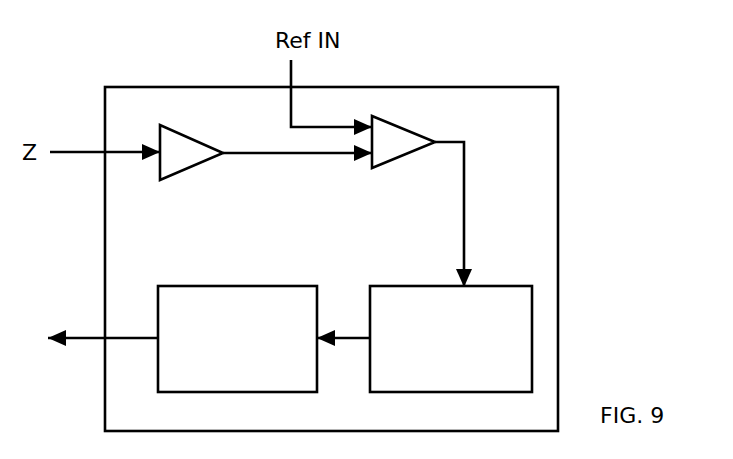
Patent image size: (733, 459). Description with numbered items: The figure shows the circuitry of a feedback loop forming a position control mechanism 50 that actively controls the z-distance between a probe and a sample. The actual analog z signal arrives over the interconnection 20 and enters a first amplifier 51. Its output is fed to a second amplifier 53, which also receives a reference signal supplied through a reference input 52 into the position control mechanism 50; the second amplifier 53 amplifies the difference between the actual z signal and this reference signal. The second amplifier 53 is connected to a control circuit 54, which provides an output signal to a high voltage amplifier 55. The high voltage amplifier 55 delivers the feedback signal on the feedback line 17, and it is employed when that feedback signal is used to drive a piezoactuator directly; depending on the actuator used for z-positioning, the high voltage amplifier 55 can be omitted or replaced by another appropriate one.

The feedback line 17 is at (87, 338).
The interconnection 20 is at (85, 150).
The position control mechanism 50 is at (490, 106).
The first amplifier 51 is at (187, 157).
The reference input 52 is at (292, 82).
The second amplifier 53 is at (383, 152).
The control circuit 54 is at (383, 297).
The high voltage amplifier 55 is at (215, 300).